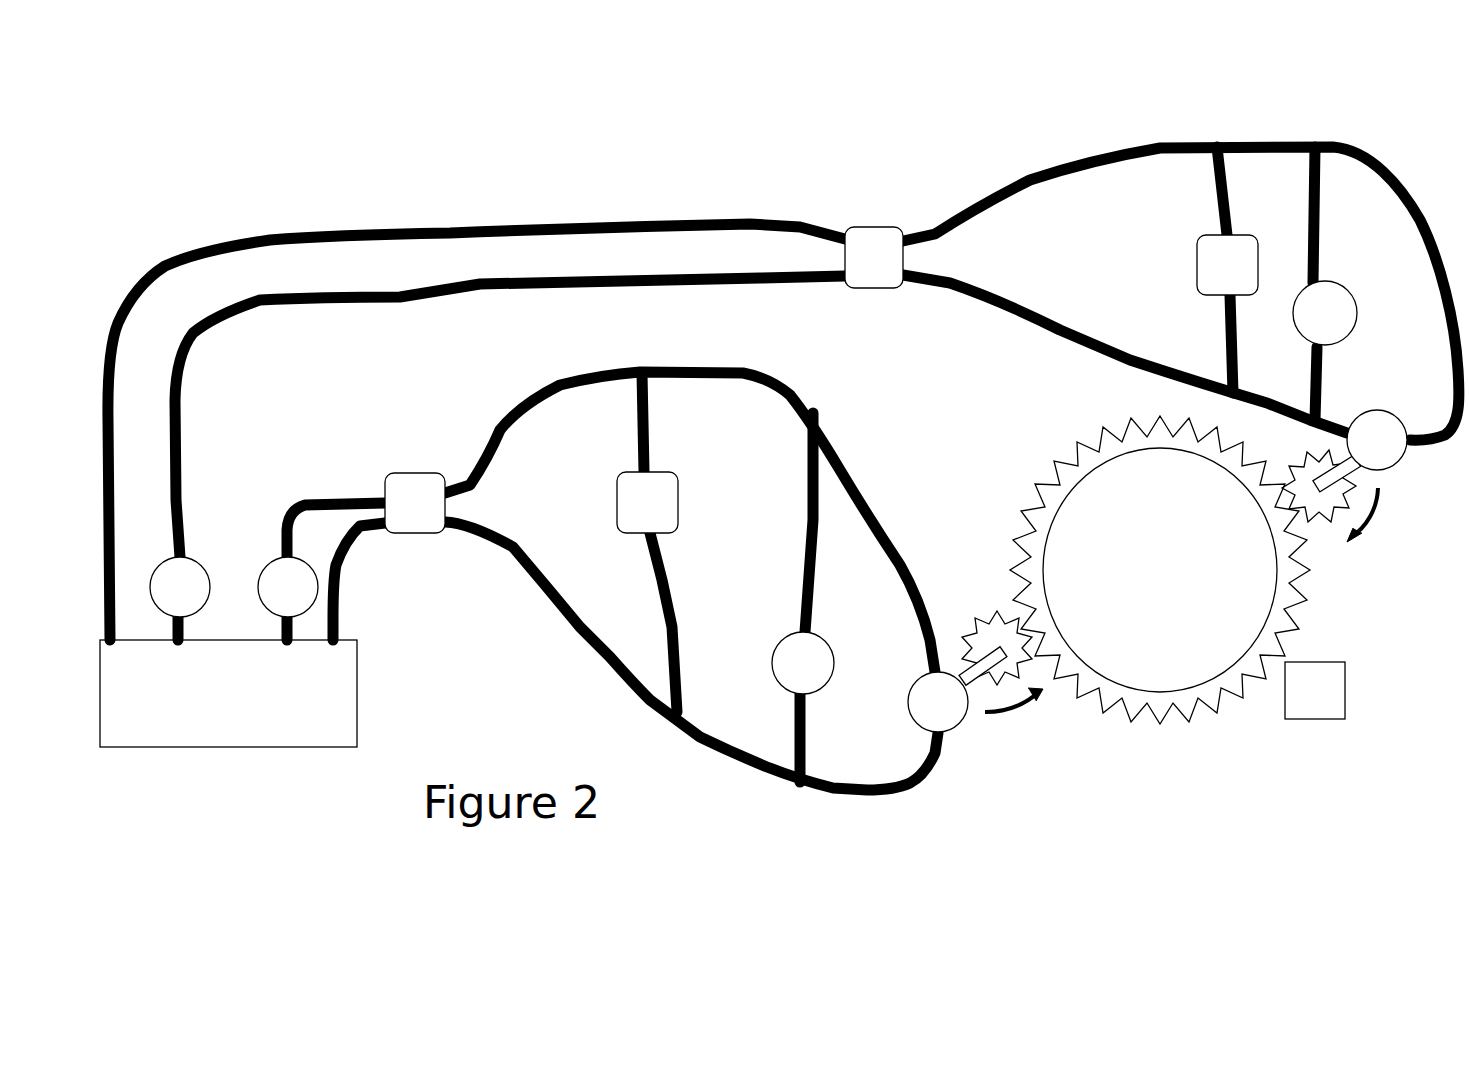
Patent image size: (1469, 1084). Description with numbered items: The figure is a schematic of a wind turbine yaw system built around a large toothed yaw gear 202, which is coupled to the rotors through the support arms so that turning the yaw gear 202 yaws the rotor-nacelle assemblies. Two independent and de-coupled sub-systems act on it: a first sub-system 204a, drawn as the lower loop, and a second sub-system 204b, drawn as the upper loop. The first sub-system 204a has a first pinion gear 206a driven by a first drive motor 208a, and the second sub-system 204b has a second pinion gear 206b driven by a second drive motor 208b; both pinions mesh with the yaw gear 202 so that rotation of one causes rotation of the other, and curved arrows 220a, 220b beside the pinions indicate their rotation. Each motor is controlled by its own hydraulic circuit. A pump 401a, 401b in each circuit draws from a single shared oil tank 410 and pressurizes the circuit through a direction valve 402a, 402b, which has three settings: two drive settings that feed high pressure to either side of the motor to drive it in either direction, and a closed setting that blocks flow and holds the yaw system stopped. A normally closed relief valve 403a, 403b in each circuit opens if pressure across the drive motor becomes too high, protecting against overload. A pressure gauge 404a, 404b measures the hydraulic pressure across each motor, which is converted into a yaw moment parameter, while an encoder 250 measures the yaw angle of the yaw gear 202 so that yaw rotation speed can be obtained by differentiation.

The yaw gear 202 is at (1185, 700).
The first sub-system 204a is at (970, 790).
The second sub-system 204b is at (997, 340).
The first pinion gear 206a is at (990, 632).
The second pinion gear 206b is at (1325, 508).
The first drive motor 208a is at (938, 702).
The second drive motor 208b is at (1377, 440).
The first rotation direction 220a is at (1017, 715).
The second rotation direction 220b is at (1372, 523).
The encoder 250 is at (1310, 708).
The pump 401a is at (288, 587).
The pump 401b is at (180, 587).
The direction valve 402a is at (415, 503).
The direction valve 402b is at (874, 257).
The relief valve 403a is at (647, 502).
The relief valve 403b is at (1227, 265).
The pressure gauge 404a is at (803, 663).
The pressure gauge 404b is at (1325, 313).
The oil tank 410 is at (228, 693).